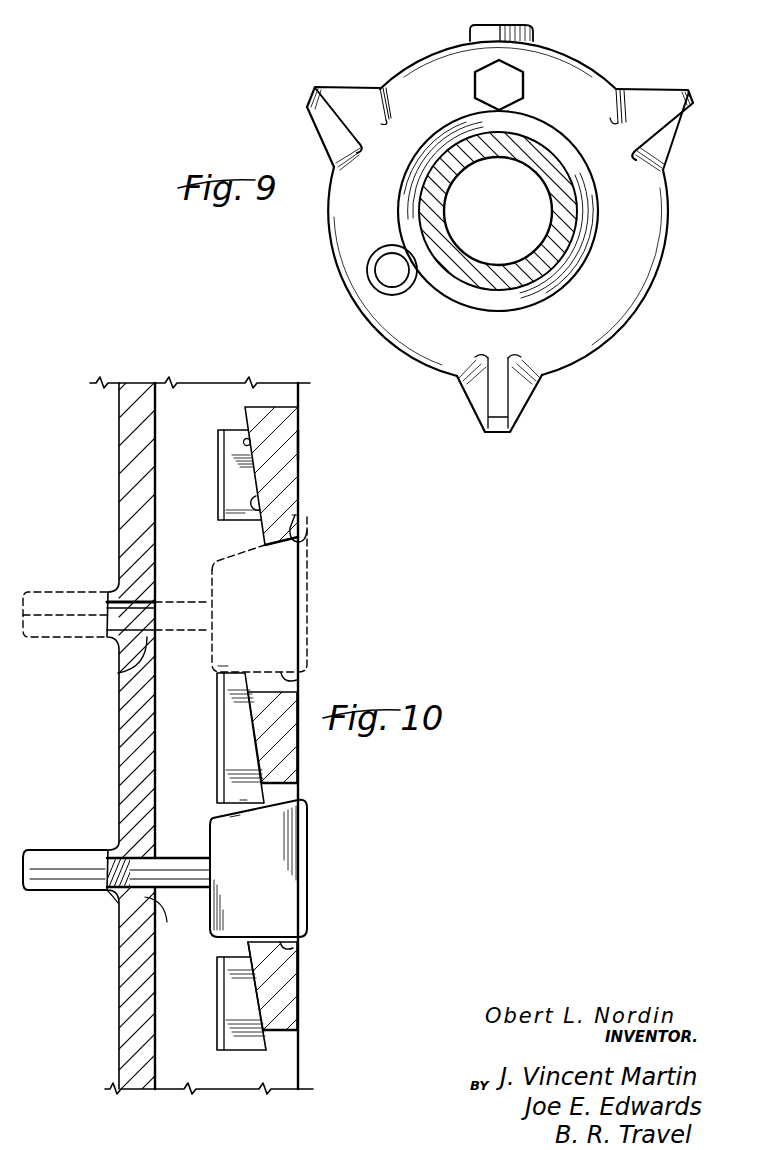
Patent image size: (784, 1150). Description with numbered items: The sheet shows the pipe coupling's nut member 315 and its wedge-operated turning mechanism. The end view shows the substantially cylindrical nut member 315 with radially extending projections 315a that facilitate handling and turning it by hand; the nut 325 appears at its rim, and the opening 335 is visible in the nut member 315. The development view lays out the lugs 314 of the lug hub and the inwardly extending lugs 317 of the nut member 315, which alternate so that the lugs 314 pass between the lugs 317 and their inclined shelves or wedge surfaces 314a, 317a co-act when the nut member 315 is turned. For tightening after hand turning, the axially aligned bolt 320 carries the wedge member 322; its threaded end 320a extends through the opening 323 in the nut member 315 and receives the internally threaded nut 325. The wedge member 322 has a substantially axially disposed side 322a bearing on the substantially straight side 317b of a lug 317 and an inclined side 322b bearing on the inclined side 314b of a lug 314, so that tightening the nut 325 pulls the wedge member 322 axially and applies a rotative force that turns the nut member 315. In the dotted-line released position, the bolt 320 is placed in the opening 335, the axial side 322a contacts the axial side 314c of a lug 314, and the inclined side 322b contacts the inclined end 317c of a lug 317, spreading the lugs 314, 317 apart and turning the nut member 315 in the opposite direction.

In FIG. 10, the lug 314 is at (230, 468).
In FIG. 10, the inclined shelf or wedge surface 314a is at (262, 498).
In FIG. 10, the inclined side 314b is at (233, 817).
In FIG. 10, the substantially axial side 314c is at (227, 672).
In FIG. 9, the nut member 315 is at (643, 263).
In FIG. 10, the nut member 315 is at (127, 766).
In FIG. 9, the radially extending projection 315a is at (332, 107).
In FIG. 10, the lug 317 is at (290, 473).
In FIG. 10, the inclined shelf or wedge surface 317a is at (298, 447).
In FIG. 10, the substantially straight side 317b is at (258, 935).
In FIG. 10, the inclined end 317c is at (307, 552).
In FIG. 10, the bolt 320 is at (176, 602).
In FIG. 10, the threaded end 320a is at (117, 895).
In FIG. 10, the wedge member 322 is at (287, 592).
In FIG. 10, the substantially axially disposed side 322a is at (280, 676).
In FIG. 10, the inclined side 322b is at (298, 513).
In FIG. 10, the opening 323 is at (148, 897).
In FIG. 9, the nut 325 is at (510, 85).
In FIG. 10, the nut 325 is at (50, 598).
In FIG. 9, the opening 335 is at (388, 282).
In FIG. 10, the opening 335 is at (118, 673).